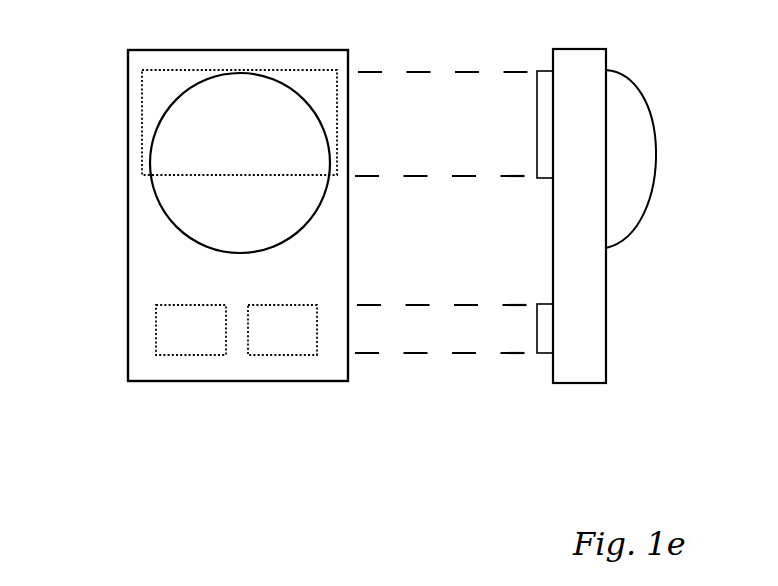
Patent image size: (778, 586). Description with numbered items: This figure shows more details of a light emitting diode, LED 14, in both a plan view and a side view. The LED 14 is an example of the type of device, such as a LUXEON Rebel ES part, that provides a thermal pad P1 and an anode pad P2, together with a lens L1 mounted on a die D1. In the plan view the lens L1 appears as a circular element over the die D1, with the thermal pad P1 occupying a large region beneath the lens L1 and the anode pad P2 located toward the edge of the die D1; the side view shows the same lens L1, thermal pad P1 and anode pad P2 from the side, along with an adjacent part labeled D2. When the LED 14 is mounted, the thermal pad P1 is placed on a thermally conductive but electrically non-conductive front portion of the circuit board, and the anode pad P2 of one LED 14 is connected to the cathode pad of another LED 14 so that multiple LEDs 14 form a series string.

The light emitting diode (LED) 14 is at (447, 452).
The die D1 is at (128, 348).
The second device (lens attachment) D2 is at (606, 357).
The lens L1 is at (170, 222).
The thermal pad P1 is at (142, 102).
The anode pad P2 is at (185, 355).